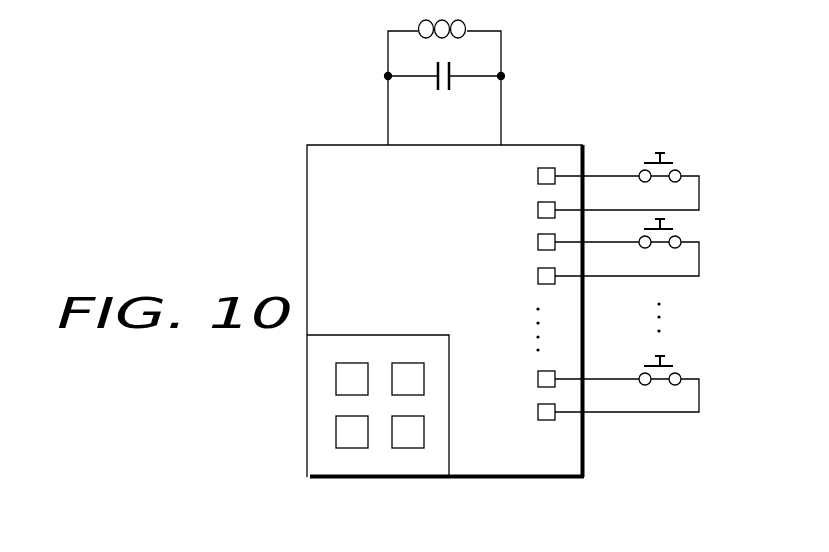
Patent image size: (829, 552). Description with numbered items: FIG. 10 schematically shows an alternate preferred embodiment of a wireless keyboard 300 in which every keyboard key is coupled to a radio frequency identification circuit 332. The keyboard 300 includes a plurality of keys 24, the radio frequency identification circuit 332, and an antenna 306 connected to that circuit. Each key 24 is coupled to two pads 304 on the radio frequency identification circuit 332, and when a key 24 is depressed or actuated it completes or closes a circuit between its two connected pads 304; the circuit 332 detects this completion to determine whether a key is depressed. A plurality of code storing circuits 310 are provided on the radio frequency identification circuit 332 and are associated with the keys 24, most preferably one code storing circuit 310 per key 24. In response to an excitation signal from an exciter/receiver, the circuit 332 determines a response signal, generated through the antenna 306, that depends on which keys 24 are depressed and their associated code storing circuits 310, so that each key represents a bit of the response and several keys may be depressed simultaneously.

The wireless keyboard 300 is at (740, 135).
The input terminals 304 is at (541, 167).
The antenna 306 is at (519, 74).
The keys 24 is at (673, 163).
The code storing circuits 310 is at (405, 448).
The radio frequency identification circuit 332 is at (542, 480).